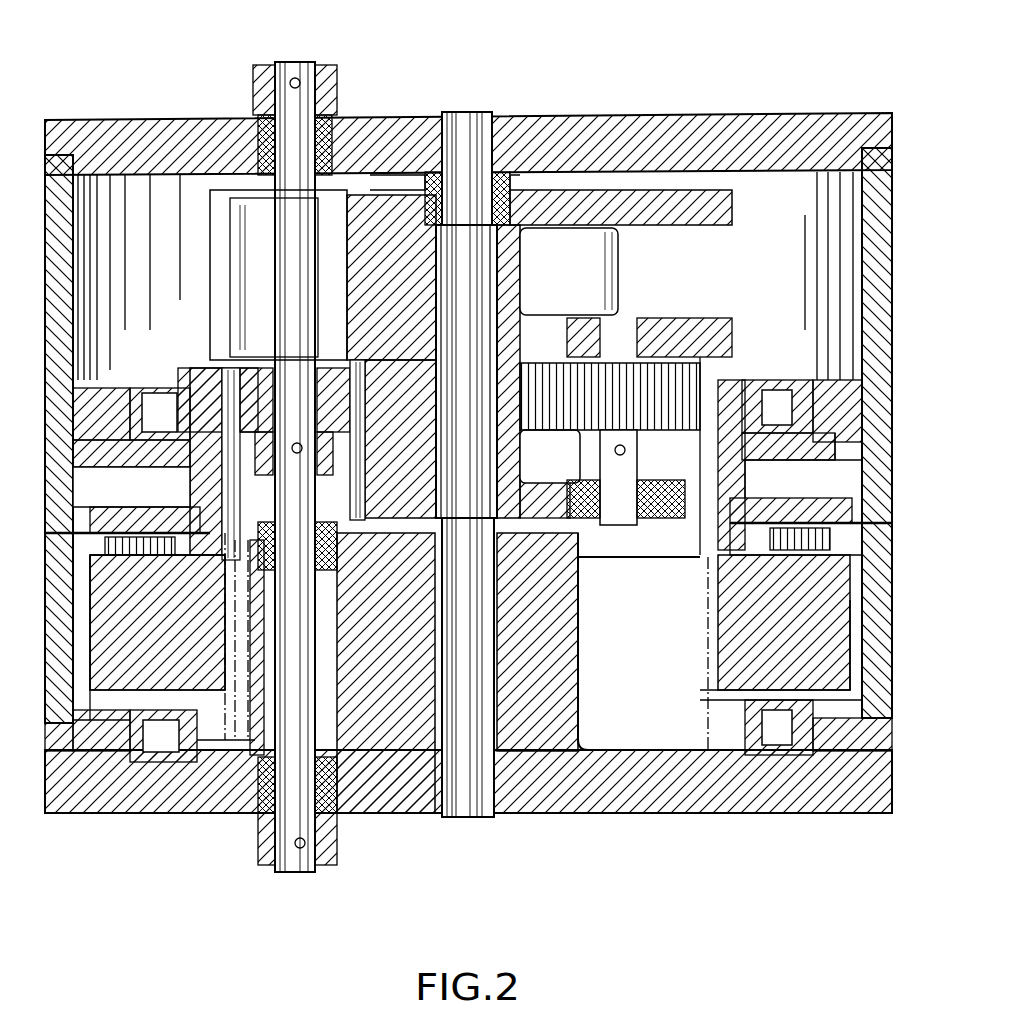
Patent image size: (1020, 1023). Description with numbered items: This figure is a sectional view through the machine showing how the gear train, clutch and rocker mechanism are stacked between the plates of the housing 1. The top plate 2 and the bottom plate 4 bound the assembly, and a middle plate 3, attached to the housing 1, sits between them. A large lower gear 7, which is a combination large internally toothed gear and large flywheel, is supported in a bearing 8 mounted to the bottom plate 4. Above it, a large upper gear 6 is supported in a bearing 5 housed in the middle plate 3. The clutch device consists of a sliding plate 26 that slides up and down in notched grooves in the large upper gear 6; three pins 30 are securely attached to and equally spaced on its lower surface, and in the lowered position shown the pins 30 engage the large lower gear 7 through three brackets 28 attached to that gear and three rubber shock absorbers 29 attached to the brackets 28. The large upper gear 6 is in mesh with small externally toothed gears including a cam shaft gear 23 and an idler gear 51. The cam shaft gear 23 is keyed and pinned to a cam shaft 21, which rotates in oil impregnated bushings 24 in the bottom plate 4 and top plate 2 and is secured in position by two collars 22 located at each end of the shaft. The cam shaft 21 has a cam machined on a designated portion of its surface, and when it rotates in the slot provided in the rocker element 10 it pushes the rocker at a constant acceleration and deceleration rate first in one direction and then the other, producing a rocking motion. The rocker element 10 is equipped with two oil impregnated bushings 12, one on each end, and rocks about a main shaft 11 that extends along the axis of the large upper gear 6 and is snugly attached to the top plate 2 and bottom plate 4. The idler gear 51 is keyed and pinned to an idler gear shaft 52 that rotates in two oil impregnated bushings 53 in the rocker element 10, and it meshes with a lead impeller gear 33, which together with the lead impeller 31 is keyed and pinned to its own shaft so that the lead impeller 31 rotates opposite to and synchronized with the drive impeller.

The housing 1 is at (862, 193).
The top plate 2 is at (770, 115).
The middle plate 3 is at (840, 380).
The bottom plate 4 is at (818, 810).
The bearing 5 is at (77, 534).
The large upper gear 6 is at (178, 372).
The large lower gear 7 is at (735, 755).
The bearing 8 is at (782, 755).
The rocker element 10 is at (645, 190).
The main shaft 11 is at (470, 115).
The oil impregnated bushings 12 is at (520, 178).
The cam shaft 21 is at (290, 62).
The collars 22 is at (337, 68).
The cam shaft gear 23 is at (245, 358).
The oil impregnated bushings 24 is at (255, 112).
The sliding plate 26 is at (765, 498).
The brackets 28 is at (150, 560).
The rubber shock absorbers 29 is at (157, 622).
The pins 30 is at (790, 550).
The lead impeller 31 is at (620, 262).
The lead impeller gear 33 is at (550, 456).
The idler gear 51 is at (700, 318).
The idler gear shaft 52 is at (622, 525).
The oil impregnated bushings 53 is at (645, 525).